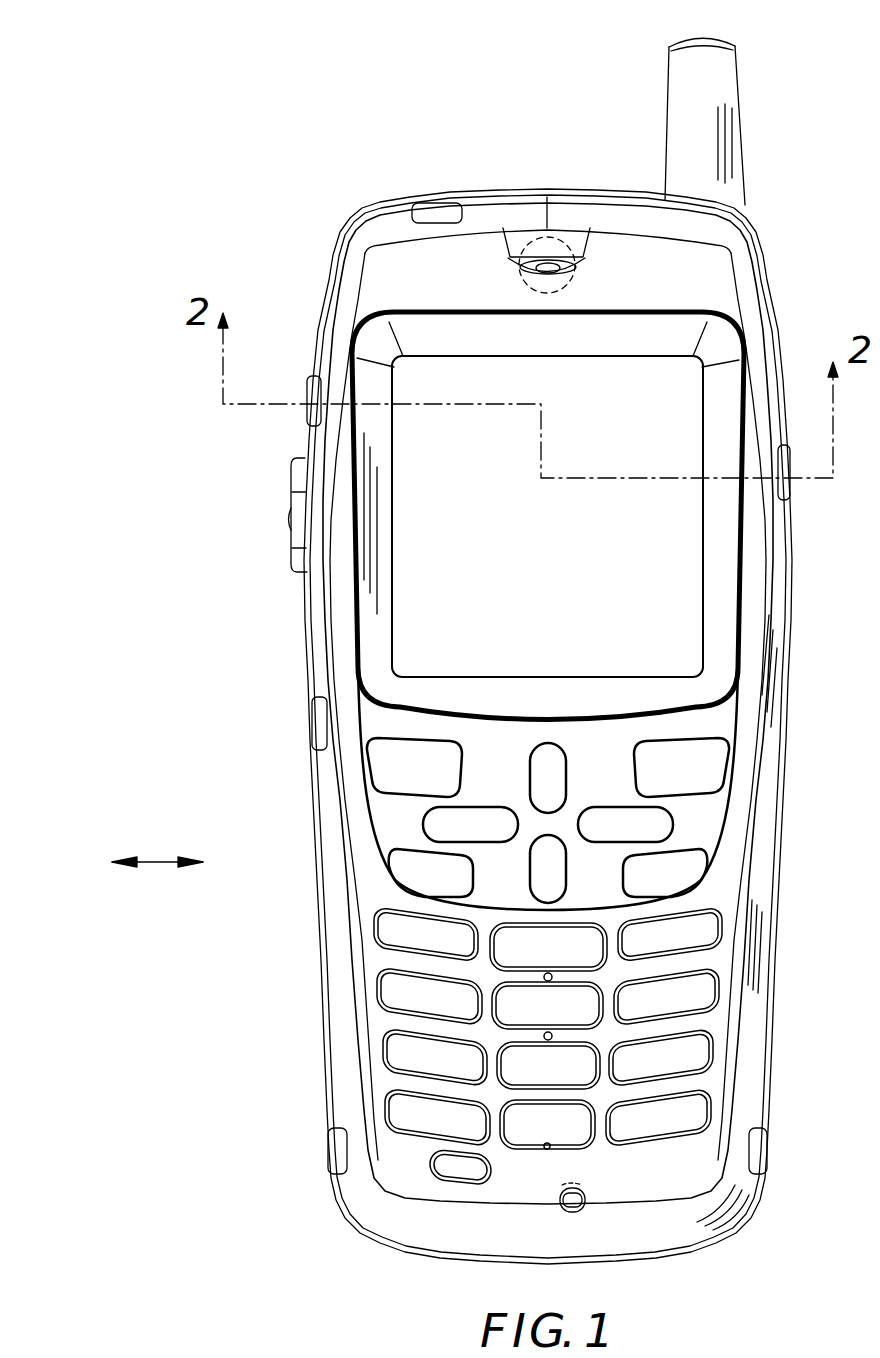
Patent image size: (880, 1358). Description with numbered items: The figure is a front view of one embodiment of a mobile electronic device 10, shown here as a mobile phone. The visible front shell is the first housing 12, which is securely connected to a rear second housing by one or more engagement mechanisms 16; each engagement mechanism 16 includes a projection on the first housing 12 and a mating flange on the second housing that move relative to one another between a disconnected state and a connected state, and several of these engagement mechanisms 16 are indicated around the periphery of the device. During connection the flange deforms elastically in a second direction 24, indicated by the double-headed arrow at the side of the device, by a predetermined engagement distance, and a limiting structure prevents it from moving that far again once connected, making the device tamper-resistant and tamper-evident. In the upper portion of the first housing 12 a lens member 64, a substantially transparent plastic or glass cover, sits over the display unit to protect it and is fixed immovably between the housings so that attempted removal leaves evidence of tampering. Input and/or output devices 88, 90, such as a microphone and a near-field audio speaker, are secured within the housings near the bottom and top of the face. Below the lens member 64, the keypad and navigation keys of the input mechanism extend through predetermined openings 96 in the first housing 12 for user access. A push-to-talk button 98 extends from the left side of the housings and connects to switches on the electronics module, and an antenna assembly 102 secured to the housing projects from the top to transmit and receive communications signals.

The mobile electronic device 10 is at (160, 117).
The first housing 12 is at (378, 273).
The engagement mechanism 16 is at (448, 212).
The second direction 24 is at (157, 862).
The lens member 64 is at (538, 553).
The input and/or output device 88 is at (578, 1210).
The input and/or output device 90 is at (561, 232).
The predetermined openings 96 is at (722, 905).
The push-to-talk button 98 is at (297, 520).
The antenna assembly 102 is at (727, 60).